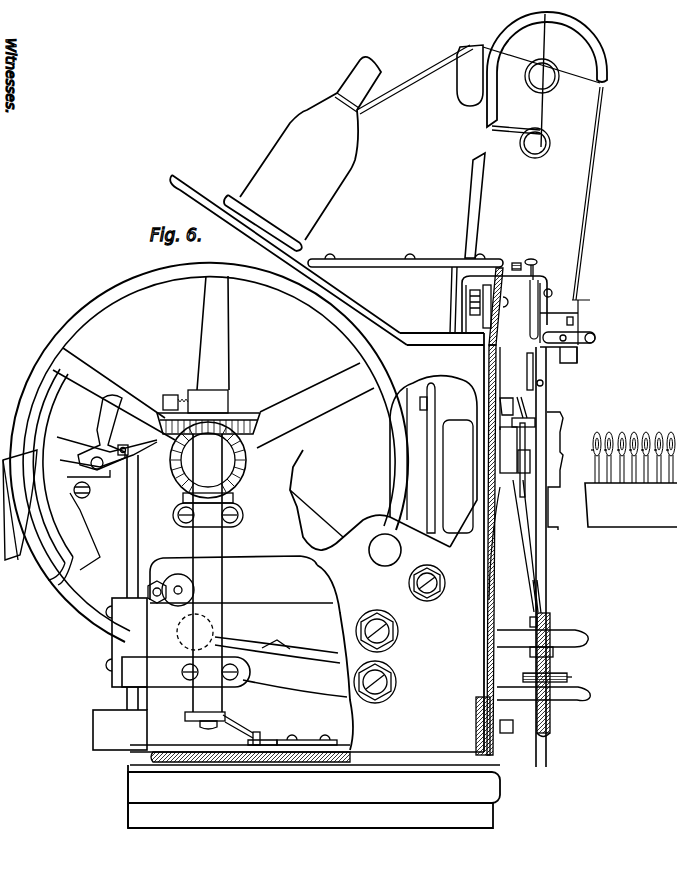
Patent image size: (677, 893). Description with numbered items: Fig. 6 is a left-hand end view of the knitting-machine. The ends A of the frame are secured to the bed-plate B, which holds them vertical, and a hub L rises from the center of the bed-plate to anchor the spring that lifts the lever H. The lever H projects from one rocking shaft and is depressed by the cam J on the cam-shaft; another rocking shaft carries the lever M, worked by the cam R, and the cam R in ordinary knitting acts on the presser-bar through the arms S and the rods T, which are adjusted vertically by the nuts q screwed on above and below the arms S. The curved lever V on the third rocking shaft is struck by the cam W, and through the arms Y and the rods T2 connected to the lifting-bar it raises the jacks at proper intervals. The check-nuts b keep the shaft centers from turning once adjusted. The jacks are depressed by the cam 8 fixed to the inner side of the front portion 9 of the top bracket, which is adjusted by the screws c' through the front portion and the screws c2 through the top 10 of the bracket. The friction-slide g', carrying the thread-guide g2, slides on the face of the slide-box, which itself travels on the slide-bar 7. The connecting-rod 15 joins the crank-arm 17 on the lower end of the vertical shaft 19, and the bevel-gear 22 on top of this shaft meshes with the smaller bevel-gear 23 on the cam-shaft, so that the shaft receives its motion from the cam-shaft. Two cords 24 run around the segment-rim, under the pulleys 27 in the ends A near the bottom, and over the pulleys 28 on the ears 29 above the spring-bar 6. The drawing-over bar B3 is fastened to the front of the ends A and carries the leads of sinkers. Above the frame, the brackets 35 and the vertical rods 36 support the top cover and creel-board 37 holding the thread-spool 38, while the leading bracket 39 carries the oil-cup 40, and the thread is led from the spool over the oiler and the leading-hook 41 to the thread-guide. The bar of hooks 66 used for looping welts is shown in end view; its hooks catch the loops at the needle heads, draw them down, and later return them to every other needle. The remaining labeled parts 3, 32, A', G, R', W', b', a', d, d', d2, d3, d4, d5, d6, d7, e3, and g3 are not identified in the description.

The balance wheel 3 is at (209, 452).
The vertical shaft 19 is at (208, 581).
The bevel-gear 22 is at (208, 412).
The smaller bevel-gear 23 is at (238, 462).
The cords 24 is at (232, 760).
The pulleys 27 is at (493, 720).
The pulleys 28 is at (502, 306).
The ears 29 is at (467, 305).
The guide plate 32 is at (472, 232).
The brackets 35 is at (288, 260).
The vertical rods 36 is at (448, 300).
The top cover and creel-board 37 is at (376, 244).
The thread-spool 38 is at (263, 223).
The leading bracket 39 is at (547, 85).
The oil-cup 40 is at (528, 75).
The leading-hook 41 is at (597, 171).
The top of the bracket 10 is at (504, 346).
The spring-bar 6 is at (516, 476).
The slide-bar 7 is at (559, 338).
The cam 8 is at (527, 309).
The front portion of the top bracket 9 is at (542, 288).
The connecting-rod 15 is at (262, 736).
The crank-arm 17 is at (238, 721).
The hooks 66 is at (619, 479).
The ends A is at (288, 542).
The frame plate A' is at (315, 748).
The bed-plate B is at (314, 796).
The drawing-over bar B3 is at (515, 460).
The guide G is at (433, 461).
The lever H is at (241, 579).
The lever M is at (276, 634).
The curved lever V is at (281, 668).
The cam J is at (76, 477).
The cam R is at (55, 543).
The plate R' is at (10, 510).
The cam W is at (107, 503).
The screw W' is at (69, 490).
The rods T is at (523, 557).
The rods T2 is at (555, 471).
The arms S is at (542, 638).
The arms Y is at (543, 694).
The nuts q is at (541, 658).
The check-nut b is at (399, 632).
The nut b' is at (537, 679).
The collar a' is at (572, 673).
The screws c' is at (553, 293).
The screws c2 is at (536, 265).
The rod d is at (424, 458).
The needle d' is at (589, 451).
The needle d2 is at (603, 451).
The needle d3 is at (616, 451).
The needle d4 is at (628, 451).
The needle d5 is at (640, 451).
The needle d6 is at (653, 451).
The needle d7 is at (665, 451).
The bracket e3 is at (569, 319).
The friction-slide g' is at (569, 332).
The thread-guide g2 is at (584, 321).
The bracket g3 is at (571, 358).
The hub L is at (307, 738).